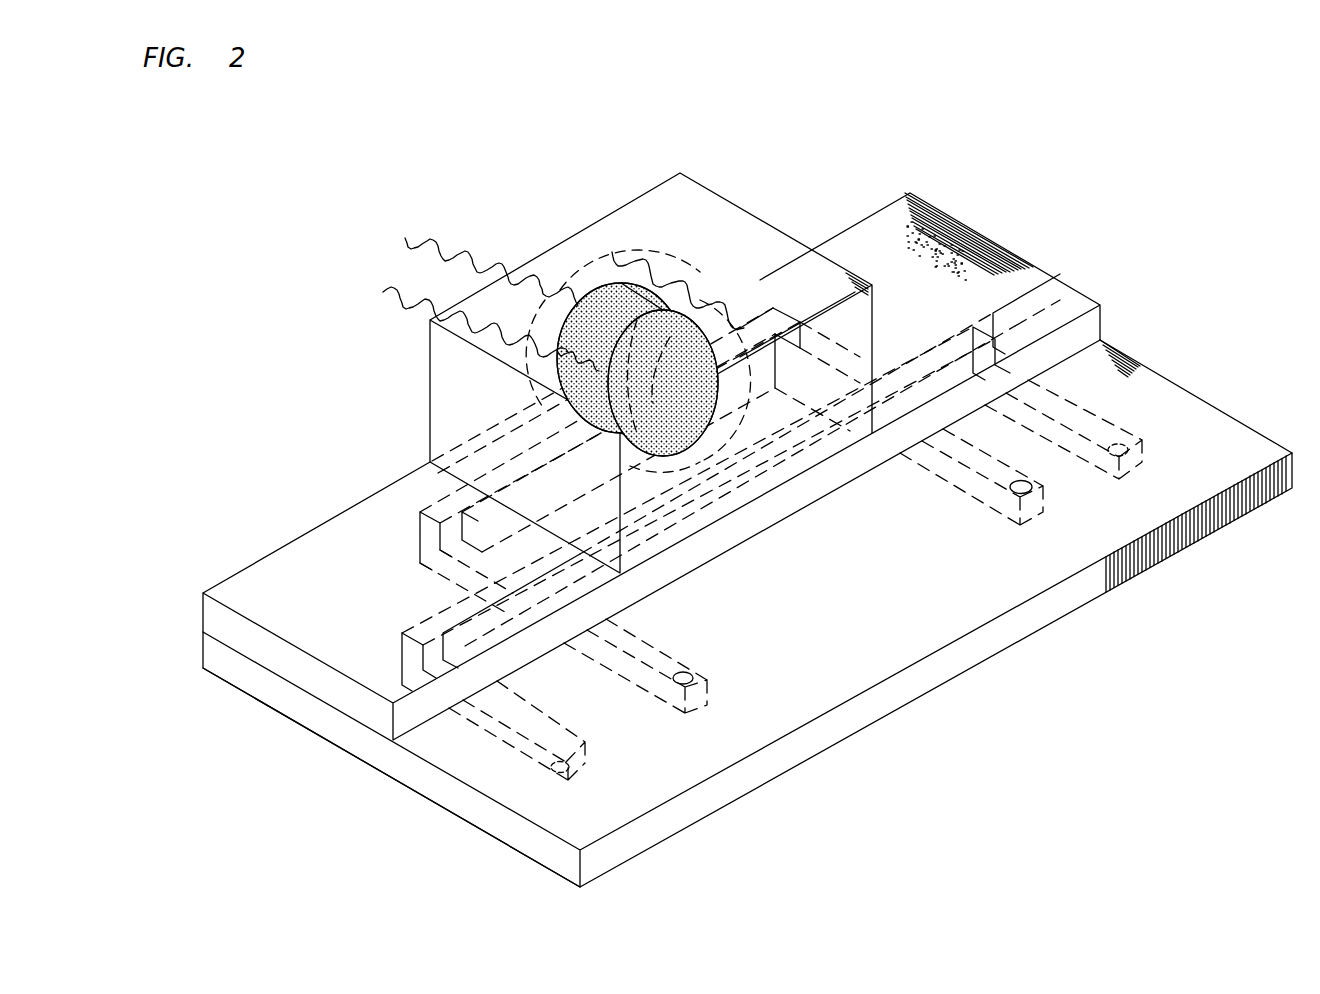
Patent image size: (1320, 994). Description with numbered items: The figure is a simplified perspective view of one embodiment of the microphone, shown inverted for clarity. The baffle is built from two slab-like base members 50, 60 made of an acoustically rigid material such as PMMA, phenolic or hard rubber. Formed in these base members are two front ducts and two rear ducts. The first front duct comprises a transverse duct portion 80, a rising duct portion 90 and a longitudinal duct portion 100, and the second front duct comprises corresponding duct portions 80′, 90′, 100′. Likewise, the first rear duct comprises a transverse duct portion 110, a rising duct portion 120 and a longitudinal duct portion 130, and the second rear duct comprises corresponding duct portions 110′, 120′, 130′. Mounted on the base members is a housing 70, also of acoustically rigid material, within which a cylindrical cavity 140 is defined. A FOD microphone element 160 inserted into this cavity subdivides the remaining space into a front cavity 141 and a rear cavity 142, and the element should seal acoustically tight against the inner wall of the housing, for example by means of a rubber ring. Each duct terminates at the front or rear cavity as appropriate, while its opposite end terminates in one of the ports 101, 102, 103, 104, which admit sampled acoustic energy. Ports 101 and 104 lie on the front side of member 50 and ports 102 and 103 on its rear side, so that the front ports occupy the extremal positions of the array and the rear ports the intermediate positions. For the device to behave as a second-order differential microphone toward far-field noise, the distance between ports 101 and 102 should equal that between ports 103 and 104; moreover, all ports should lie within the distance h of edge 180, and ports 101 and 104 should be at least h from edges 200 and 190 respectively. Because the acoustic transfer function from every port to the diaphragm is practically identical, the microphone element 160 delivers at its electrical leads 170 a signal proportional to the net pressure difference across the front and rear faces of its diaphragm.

The base member 50 is at (367, 753).
The base member 60 is at (272, 655).
The housing 70 is at (703, 187).
The transverse duct portion 80 is at (522, 725).
The rising duct portion 90 is at (398, 647).
The longitudinal duct portion 100 is at (438, 612).
The transverse duct portion 110 is at (655, 645).
The rising duct portion 120 is at (418, 530).
The longitudinal duct portion 130 is at (501, 465).
The transverse duct portion 80′ is at (1037, 397).
The rising duct portion 90′ is at (1000, 335).
The longitudinal duct portion 100′ is at (987, 317).
The transverse duct portion 110′ is at (945, 475).
The rising duct portion 120′ is at (802, 338).
The longitudinal duct portion 130′ is at (745, 325).
The port 101 is at (576, 770).
The port 102 is at (690, 672).
The port 103 is at (1030, 482).
The port 104 is at (1130, 460).
The cylindrical cavity 140 is at (698, 258).
The front cavity 141 is at (717, 433).
The rear cavity 142 is at (582, 303).
The FOD microphone element 160 is at (557, 350).
The electrical leads 170 is at (383, 292).
The edge 180 is at (1200, 520).
The edge 190 is at (1185, 385).
The edge 200 is at (487, 817).